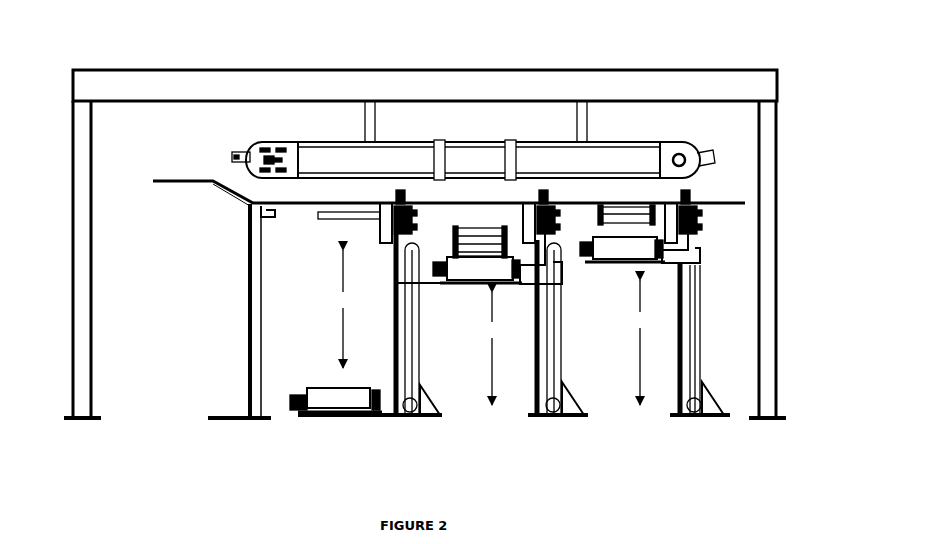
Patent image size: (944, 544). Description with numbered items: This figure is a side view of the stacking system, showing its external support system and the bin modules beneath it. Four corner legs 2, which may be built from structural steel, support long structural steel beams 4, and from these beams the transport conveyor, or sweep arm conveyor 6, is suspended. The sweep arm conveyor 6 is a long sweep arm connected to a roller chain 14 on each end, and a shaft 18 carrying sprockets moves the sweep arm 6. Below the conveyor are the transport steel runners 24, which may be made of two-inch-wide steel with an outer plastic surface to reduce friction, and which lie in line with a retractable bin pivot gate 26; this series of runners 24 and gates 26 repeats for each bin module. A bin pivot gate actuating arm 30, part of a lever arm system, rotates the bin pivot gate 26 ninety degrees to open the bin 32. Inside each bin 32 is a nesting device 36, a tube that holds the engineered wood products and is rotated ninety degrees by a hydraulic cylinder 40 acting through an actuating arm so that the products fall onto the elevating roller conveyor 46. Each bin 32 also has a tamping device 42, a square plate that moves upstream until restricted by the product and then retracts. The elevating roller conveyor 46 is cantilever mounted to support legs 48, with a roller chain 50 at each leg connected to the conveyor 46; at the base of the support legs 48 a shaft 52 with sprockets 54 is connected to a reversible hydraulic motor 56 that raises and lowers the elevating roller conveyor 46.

The corner legs 2 is at (71, 143).
The long structural steel beams 4 is at (409, 88).
The sweep arm conveyor 6 is at (232, 152).
The roller chain 14 is at (346, 141).
The shaft 18 is at (260, 150).
The transport steel runners 24 is at (232, 191).
The bin pivot gate 26 is at (352, 202).
The bin pivot gate actuating arm 30 is at (412, 214).
The bin 32 is at (491, 327).
The nesting device 36 is at (356, 224).
The hydraulic cylinder 40 is at (413, 229).
The tamping device 42 is at (376, 212).
The elevating roller conveyor 46 is at (341, 390).
The support legs 48 is at (405, 300).
The roller chain 50 is at (420, 300).
The shaft 52 is at (380, 402).
The sprockets 54 is at (422, 412).
The reversible hydraulic motor 56 is at (296, 404).